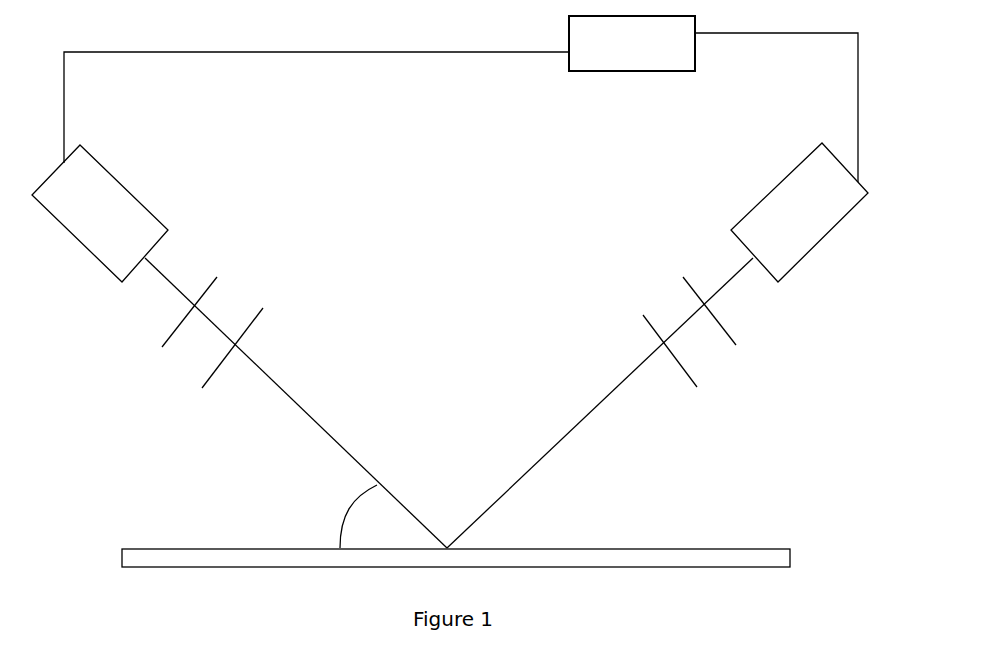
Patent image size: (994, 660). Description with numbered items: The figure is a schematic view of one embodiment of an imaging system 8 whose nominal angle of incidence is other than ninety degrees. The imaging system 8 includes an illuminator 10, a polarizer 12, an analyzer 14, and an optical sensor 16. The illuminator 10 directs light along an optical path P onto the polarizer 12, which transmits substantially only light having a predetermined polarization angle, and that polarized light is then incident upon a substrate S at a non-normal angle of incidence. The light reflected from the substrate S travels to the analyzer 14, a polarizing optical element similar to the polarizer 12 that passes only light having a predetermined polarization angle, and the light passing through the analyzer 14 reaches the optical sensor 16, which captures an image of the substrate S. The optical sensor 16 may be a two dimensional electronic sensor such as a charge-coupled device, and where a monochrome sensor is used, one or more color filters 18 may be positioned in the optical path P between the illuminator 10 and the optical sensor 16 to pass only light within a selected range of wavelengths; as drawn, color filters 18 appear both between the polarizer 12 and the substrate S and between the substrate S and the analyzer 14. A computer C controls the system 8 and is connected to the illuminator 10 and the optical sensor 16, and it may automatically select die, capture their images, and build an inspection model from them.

The imaging system 8 is at (415, 220).
The illuminator 10 is at (108, 177).
The polarizer 12 is at (205, 287).
The analyzer 14 is at (680, 275).
The optical sensor 16 is at (795, 163).
The color filter 18 is at (258, 313).
The computer C is at (461, 99).
The optical path P is at (587, 413).
The substrate S is at (133, 542).